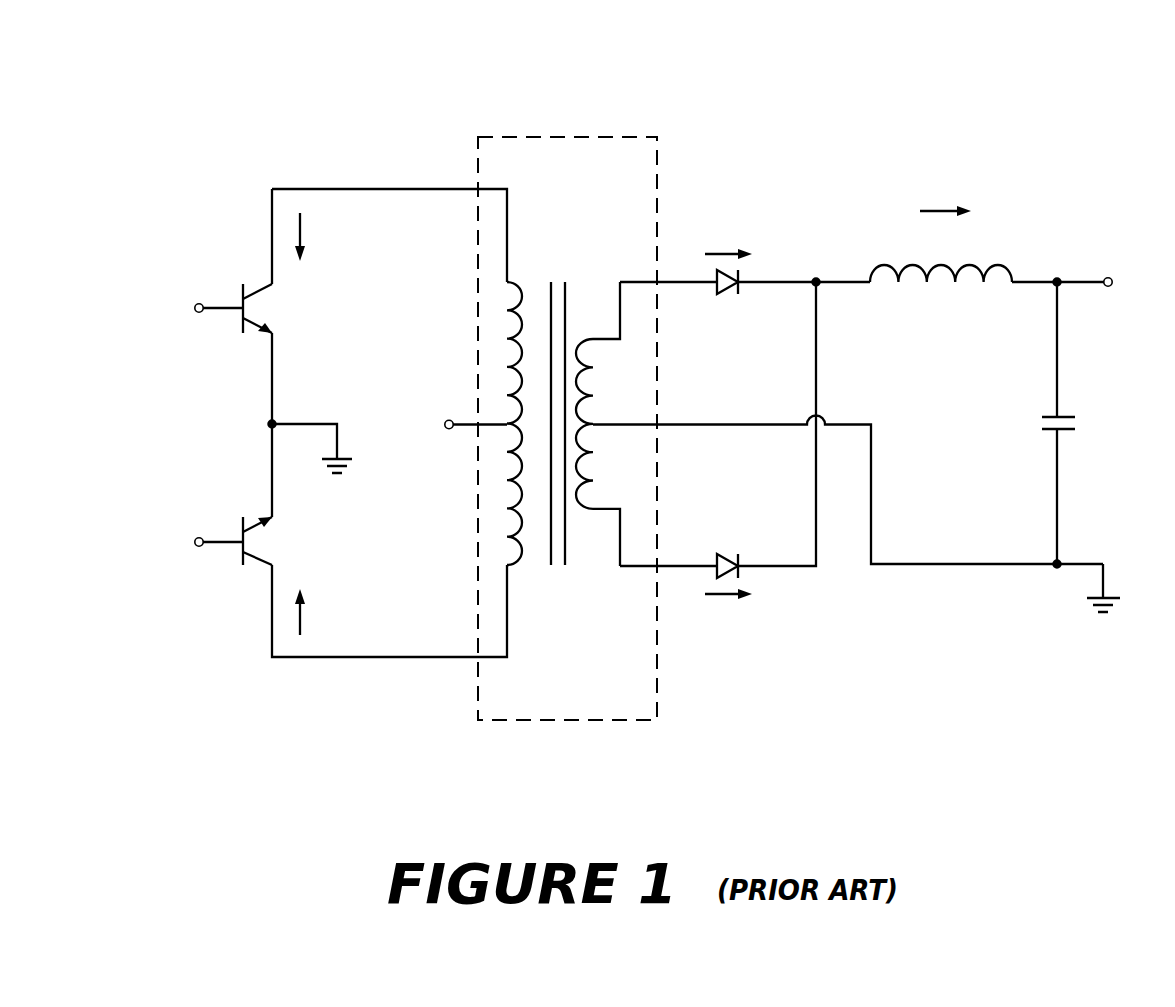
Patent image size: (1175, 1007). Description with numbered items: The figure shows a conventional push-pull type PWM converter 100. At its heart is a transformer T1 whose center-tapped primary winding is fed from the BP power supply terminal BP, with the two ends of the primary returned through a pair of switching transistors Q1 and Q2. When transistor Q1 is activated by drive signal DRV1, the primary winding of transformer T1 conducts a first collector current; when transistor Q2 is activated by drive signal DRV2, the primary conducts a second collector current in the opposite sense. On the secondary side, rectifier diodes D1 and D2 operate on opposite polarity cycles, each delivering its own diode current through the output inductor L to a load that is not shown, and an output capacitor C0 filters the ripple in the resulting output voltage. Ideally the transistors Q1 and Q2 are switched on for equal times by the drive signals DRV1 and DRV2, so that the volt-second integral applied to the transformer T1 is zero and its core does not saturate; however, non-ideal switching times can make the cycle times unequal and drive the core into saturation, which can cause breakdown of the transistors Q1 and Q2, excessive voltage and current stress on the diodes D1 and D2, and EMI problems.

The prior art push-pull converter circuit 100 is at (1010, 101).
The transistor Q1 is at (280, 308).
The transistor Q2 is at (280, 541).
The diode D1 is at (730, 298).
The diode D2 is at (730, 553).
The transformer T1 is at (567, 413).
The inductor L is at (941, 255).
The capacitor C0 is at (1082, 430).
The power supply terminal BP is at (456, 425).
The drive signal DRV1 is at (181, 308).
The drive signal DRV2 is at (181, 542).